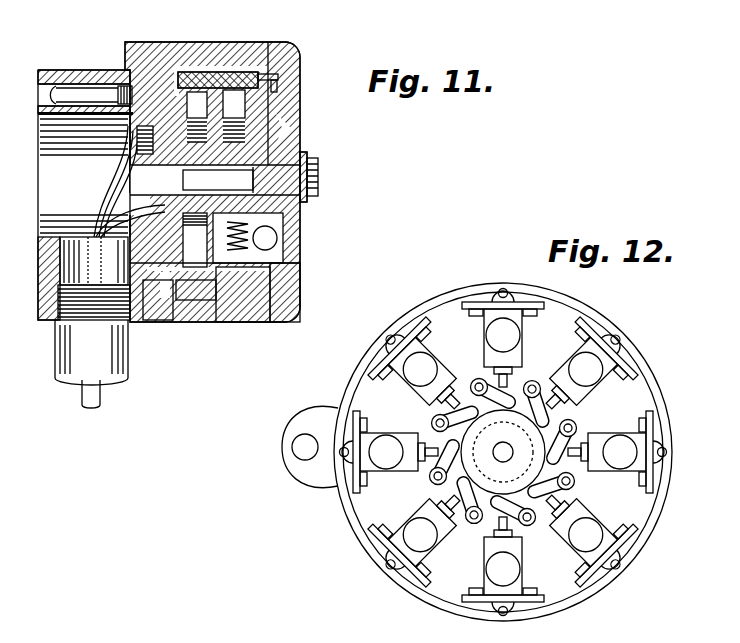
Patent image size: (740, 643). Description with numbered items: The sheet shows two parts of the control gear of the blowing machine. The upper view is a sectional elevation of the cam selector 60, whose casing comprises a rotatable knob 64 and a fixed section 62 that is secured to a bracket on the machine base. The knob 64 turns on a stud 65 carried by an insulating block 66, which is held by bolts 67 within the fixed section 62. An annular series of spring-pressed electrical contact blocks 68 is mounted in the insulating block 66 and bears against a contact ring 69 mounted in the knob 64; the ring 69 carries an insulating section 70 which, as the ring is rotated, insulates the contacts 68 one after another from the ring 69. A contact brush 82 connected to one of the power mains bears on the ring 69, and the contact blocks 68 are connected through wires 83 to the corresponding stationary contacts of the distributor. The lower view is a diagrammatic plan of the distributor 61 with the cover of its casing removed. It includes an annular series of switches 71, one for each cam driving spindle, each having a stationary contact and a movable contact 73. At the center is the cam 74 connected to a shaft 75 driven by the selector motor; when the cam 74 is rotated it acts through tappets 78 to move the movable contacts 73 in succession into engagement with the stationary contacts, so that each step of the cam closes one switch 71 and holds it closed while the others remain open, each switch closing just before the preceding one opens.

In FIG. 11, the selector 60 is at (306, 265).
In FIG. 12, the distributor 61 is at (648, 368).
In FIG. 11, the fixed section 62 is at (167, 322).
In FIG. 11, the rotatable knob 64 is at (238, 322).
In FIG. 11, the stud 65 is at (318, 178).
In FIG. 11, the insulating block 66 is at (145, 122).
In FIG. 11, the bolts 67 is at (88, 97).
In FIG. 11, the contact blocks 68 is at (220, 322).
In FIG. 11, the contact ring 69 is at (267, 320).
In FIG. 11, the insulating block or section 70 is at (208, 73).
In FIG. 12, the switches 71 is at (425, 390).
In FIG. 12, the movable contact 73 is at (460, 405).
In FIG. 12, the cam 74 is at (503, 452).
In FIG. 12, the shaft 75 is at (500, 461).
In FIG. 12, the tappets 78 is at (503, 449).
In FIG. 11, the contact brush 82 is at (300, 88).
In FIG. 11, the wires 83 is at (103, 177).